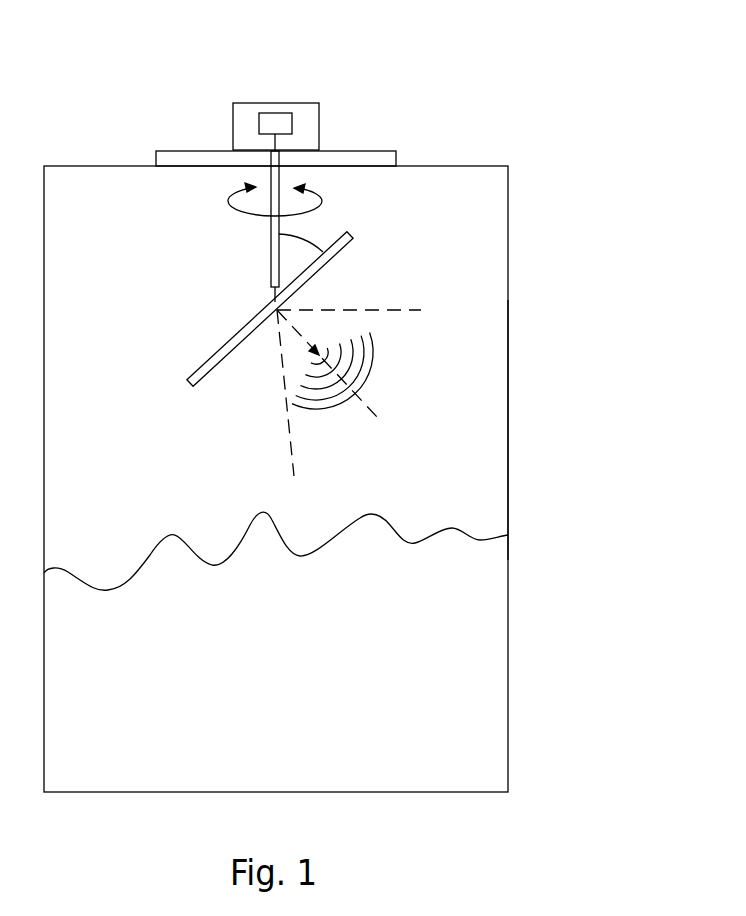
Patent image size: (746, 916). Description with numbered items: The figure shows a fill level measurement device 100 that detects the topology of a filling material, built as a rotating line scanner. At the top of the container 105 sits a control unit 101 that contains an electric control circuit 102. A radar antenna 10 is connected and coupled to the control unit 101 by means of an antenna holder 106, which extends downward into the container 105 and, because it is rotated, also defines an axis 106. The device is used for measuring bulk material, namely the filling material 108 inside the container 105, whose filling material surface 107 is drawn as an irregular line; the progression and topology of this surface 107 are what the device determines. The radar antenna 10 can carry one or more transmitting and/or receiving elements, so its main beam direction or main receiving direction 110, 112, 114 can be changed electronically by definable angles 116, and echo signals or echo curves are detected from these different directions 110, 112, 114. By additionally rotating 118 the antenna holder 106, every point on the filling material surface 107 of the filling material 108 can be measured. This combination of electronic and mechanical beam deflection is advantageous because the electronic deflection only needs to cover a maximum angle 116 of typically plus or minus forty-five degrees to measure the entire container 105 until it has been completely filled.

The fill level measurement device 100 is at (489, 125).
The control unit 101 is at (318, 103).
The electric control circuit 102 is at (259, 122).
The container 105 is at (508, 382).
The antenna holder 106 is at (272, 260).
The filling material surface 107 is at (173, 528).
The filling material 108 is at (480, 650).
The radar antenna 10 is at (354, 226).
The main beam direction 110 is at (291, 448).
The main beam direction 112 is at (338, 366).
The main beam direction 114 is at (380, 310).
The angle 116 is at (290, 350).
The rotating 118 is at (228, 201).